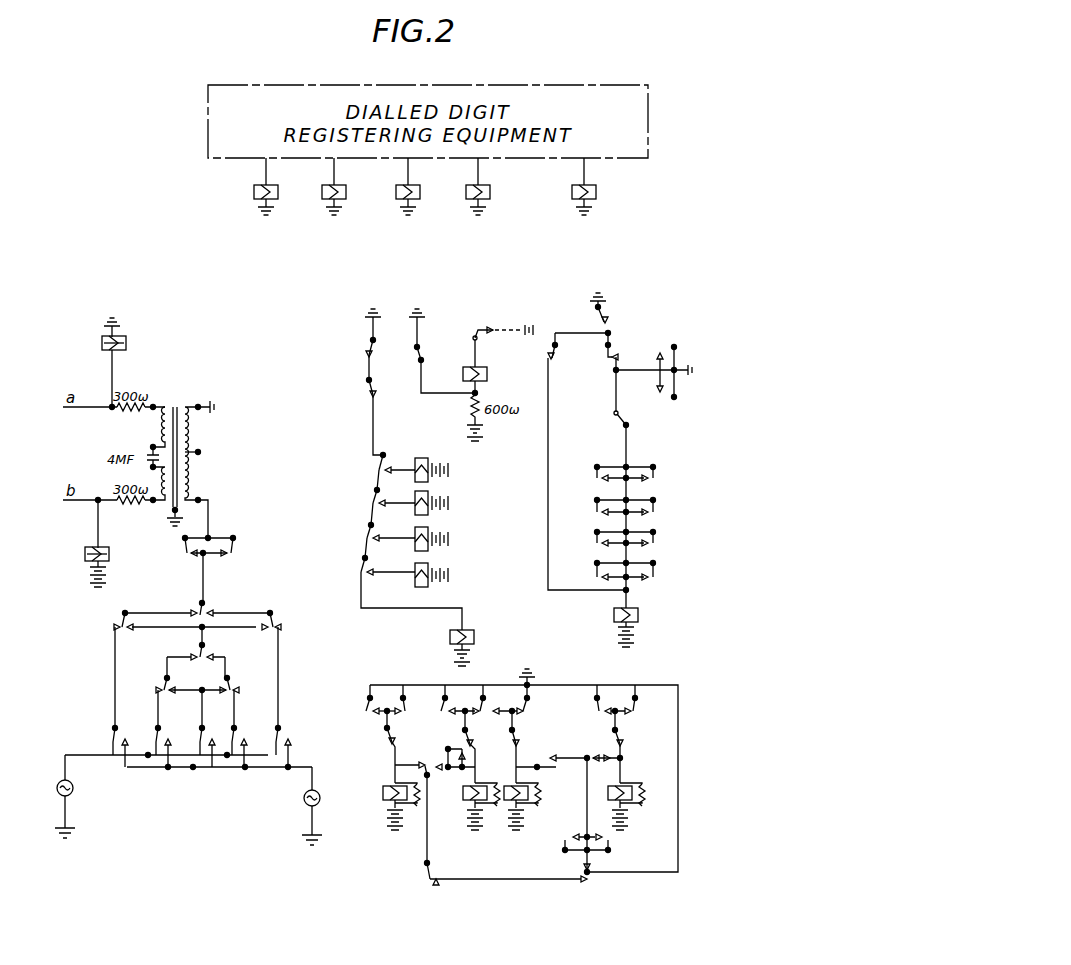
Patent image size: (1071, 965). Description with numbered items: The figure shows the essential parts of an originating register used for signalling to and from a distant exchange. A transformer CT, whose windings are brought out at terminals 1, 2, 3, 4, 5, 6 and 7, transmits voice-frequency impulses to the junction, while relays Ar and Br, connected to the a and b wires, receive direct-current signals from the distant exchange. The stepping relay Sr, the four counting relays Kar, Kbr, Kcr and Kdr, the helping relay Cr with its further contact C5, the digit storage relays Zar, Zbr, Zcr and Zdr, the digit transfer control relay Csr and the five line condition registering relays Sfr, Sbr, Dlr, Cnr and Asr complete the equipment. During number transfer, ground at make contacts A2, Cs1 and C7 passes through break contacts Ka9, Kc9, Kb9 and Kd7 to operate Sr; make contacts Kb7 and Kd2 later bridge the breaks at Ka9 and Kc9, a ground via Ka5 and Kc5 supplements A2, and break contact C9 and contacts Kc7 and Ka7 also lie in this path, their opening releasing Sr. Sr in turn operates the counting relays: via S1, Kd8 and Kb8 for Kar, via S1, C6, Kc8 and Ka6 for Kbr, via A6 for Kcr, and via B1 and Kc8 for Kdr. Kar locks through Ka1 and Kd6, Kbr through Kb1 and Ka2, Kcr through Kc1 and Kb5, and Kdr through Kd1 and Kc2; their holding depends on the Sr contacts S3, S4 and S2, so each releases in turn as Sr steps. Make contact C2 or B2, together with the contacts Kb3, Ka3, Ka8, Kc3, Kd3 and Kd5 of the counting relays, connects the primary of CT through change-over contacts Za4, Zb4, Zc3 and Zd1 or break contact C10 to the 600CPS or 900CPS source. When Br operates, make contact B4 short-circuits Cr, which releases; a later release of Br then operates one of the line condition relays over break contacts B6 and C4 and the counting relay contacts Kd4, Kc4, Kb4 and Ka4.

The digit storage relay Zar is at (280, 186).
The digit storage relay Zbr is at (349, 186).
The digit storage relay Zcr is at (422, 186).
The digit storage relay Zdr is at (493, 186).
The digit transfer control relay Csr is at (600, 186).
The relay Ar is at (120, 338).
The relay Br is at (122, 573).
The transformer CT is at (191, 406).
The transformer terminal 1 is at (154, 509).
The transformer terminal 2 is at (148, 473).
The transformer terminal 3 is at (148, 439).
The transformer terminal 4 is at (160, 399).
The transformer terminal 5 is at (199, 509).
The transformer terminal 6 is at (197, 444).
The transformer terminal 7 is at (205, 401).
The make contact of relay Br B2 is at (172, 547).
The make contact of relay Cr C2 is at (238, 548).
The change-over contact of relay Kbr Kb3 is at (216, 602).
The contact of relay Kar Ka3 is at (105, 663).
The make contact of relay Kar Ka8 is at (284, 663).
The contact of relay Kcr Kc3 is at (213, 646).
The contact of relay Kdr Kd3 is at (149, 697).
The contact of relay Kdr Kd5 is at (241, 698).
The change-over contact of relay Zar Za4 is at (101, 744).
The change-over contact of relay Zdr Zd1 is at (145, 744).
The break contact of relay Cr C10 is at (189, 744).
The change-over contact of relay Zbr Zb4 is at (225, 744).
The change-over contact of relay Zcr Zc3 is at (269, 744).
The 600 C.P.S. alternating current source 600CPS is at (73, 790).
The 900 C.P.S. alternating current source 900CPS is at (304, 802).
The break contact of relay Br B6 is at (381, 333).
The break contact of relay Cr C4 is at (381, 376).
The make contact of relay Br B4 is at (407, 346).
The contact C5 is at (495, 324).
The helping relay Cr is at (482, 365).
The contact of relay Kdr Kd4 is at (362, 465).
The contact of relay Kcr Kc4 is at (357, 499).
The contact of relay Kbr Kb4 is at (351, 534).
The contact of relay Kar Ka4 is at (346, 567).
The line condition registering relay Asr is at (413, 475).
The line condition registering relay Cnr is at (414, 509).
The line condition registering relay Dlr is at (414, 544).
The line condition registering relay Sbr is at (414, 579).
The line condition registering relay Sfr is at (450, 640).
The make contact of relay Ar A2 is at (585, 310).
The break contact of relay Cr C9 is at (587, 467).
The make contact of relay Csr Cs1 is at (627, 378).
The make contact of relay Kar Ka5 is at (662, 343).
The make contact of relay Kcr Kc5 is at (662, 397).
The make contact of relay Cr C7 is at (610, 422).
The make contact of relay Kbr Kb7 is at (583, 475).
The break contact of relay Kar Ka9 is at (663, 476).
The make contact of relay Kdr Kd2 is at (583, 508).
The break contact of relay Kcr Kc9 is at (663, 509).
The make contact of relay Kar Ka7 is at (583, 540).
The break contact of relay Kbr Kb9 is at (664, 541).
The contact of relay Kcr Kc7 is at (583, 571).
The break contact of relay Kdr Kd7 is at (664, 573).
The stepping relay Sr is at (614, 612).
The break contact of relay Kdr Kd6 is at (352, 702).
The make contact of relay Kbr Kb5 is at (415, 702).
The break contact of relay Sr S3 is at (385, 701).
The contact of relay Sr S4 is at (458, 701).
The make contact of relay Kar Ka2 is at (495, 701).
The make contact of relay Sr S2 is at (595, 709).
The make contact of relay Kcr Kc2 is at (646, 709).
The make contact of relay Kar Ka1 is at (370, 734).
The counting relay Kar is at (390, 782).
The contact of relay Kbr Kb8 is at (412, 761).
The break contact of relay Kdr Kd8 is at (412, 871).
The contact of relay Sr S1 is at (521, 885).
The break contact of relay Ar A6 is at (453, 751).
The make contact of relay Kcr Kc1 is at (481, 728).
The counting relay Kcr is at (494, 836).
The make contact of relay Kbr Kb1 is at (529, 728).
The counting relay Kbr is at (545, 820).
The make contact of relay Kar Ka6 is at (551, 757).
The contact of relay Kcr Kc8 is at (592, 794).
The make contact of relay Kdr Kd1 is at (632, 728).
The counting relay Kdr is at (650, 822).
The make contact of relay Br B1 is at (572, 844).
The make contact of relay Cr C6 is at (614, 847).